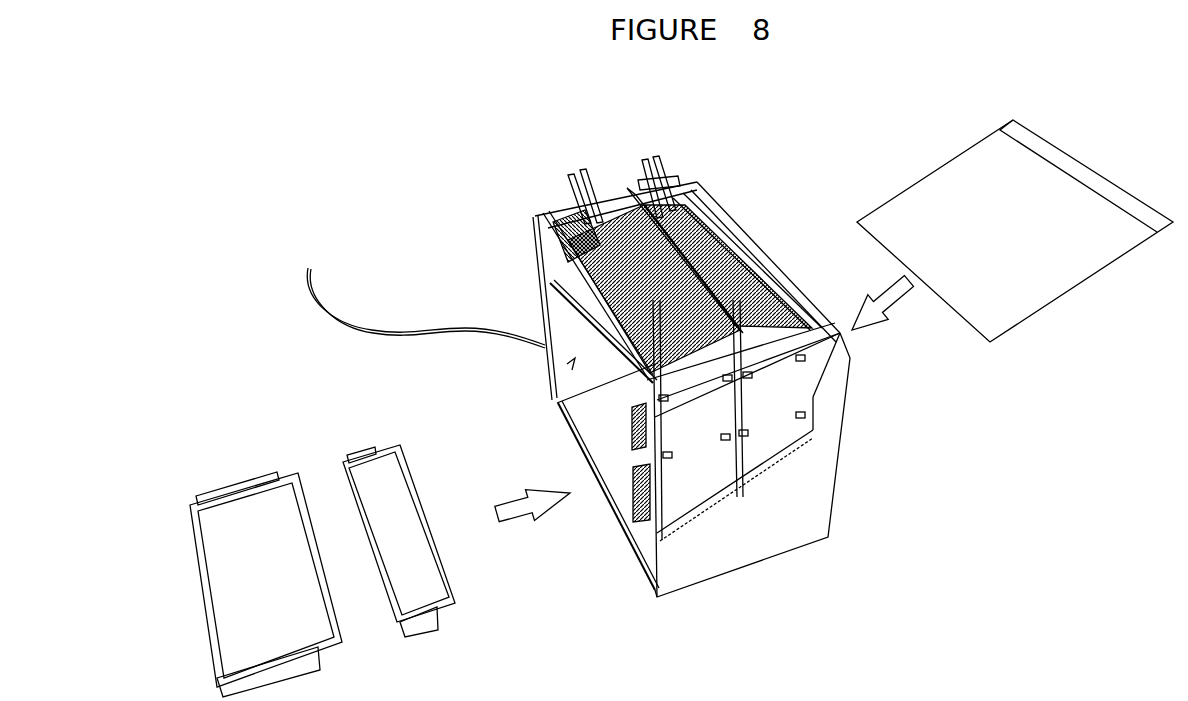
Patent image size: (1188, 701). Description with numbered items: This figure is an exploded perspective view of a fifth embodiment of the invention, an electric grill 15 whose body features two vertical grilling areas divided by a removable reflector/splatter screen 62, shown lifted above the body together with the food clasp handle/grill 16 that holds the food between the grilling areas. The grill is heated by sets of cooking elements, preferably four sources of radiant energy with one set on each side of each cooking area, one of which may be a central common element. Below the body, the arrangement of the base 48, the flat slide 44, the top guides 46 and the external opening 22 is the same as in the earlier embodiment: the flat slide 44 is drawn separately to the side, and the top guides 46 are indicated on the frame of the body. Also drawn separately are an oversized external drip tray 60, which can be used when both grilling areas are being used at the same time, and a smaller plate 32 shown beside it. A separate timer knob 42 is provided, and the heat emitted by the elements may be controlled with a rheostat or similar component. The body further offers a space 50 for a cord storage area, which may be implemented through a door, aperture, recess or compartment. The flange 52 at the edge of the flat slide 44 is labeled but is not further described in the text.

The electric grill 15 is at (236, 70).
The food clasp handle/grill 16 is at (570, 183).
The removable reflector/splatter screen 62 is at (637, 195).
The flat slide 44 is at (973, 178).
The cover flange 52 is at (1033, 140).
The oversized external drip tray 60 is at (262, 527).
The partition plate 32 is at (371, 480).
The top guides 46 is at (590, 383).
The external opening 22 is at (565, 440).
The timer knob 42 is at (632, 425).
The base 48 is at (690, 541).
The space for a cord storage area 50 is at (800, 517).